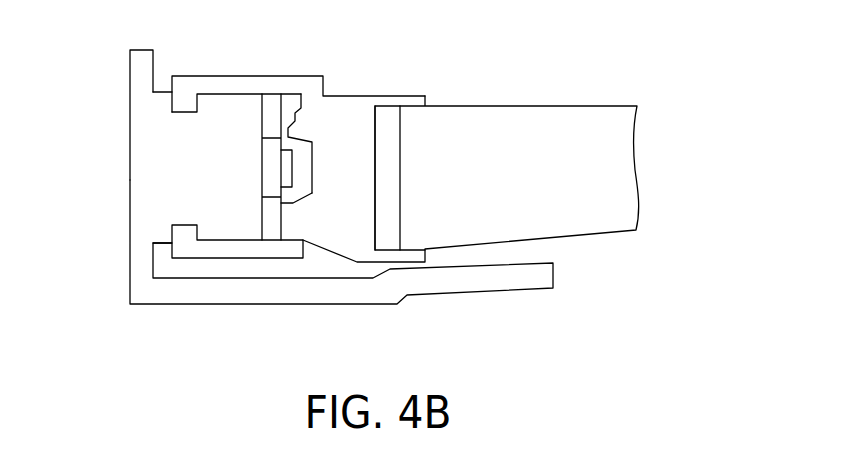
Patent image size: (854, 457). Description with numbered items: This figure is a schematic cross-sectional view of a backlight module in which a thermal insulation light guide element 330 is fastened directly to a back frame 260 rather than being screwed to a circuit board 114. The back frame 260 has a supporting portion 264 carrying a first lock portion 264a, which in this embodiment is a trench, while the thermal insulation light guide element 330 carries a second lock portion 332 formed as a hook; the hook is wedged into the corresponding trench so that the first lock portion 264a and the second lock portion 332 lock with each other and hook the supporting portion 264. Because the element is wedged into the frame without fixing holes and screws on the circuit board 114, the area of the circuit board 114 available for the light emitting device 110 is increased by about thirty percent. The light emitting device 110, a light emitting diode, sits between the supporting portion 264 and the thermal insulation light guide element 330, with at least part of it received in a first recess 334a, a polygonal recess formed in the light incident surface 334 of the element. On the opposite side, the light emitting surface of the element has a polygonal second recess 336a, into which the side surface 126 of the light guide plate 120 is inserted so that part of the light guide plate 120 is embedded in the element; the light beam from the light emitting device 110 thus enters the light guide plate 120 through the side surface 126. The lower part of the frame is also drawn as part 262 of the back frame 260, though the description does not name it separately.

The light emitting device 110 is at (285, 173).
The circuit board 114 is at (272, 158).
The light guide plate 120 is at (613, 162).
The side surface 126 is at (394, 189).
The back frame 260 is at (58, 218).
The lower housing portion 262 is at (185, 292).
The supporting portion 264 is at (165, 173).
The first lock portion 264a is at (182, 95).
The thermal insulation light guide element 330 is at (340, 236).
The second lock portion 332 is at (245, 83).
The light incident surface 334 is at (288, 120).
The first recess 334a is at (301, 193).
The second recess 336a is at (388, 116).